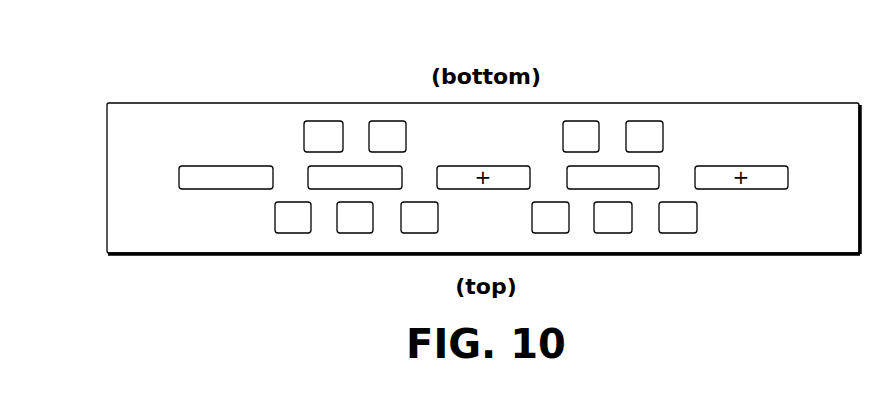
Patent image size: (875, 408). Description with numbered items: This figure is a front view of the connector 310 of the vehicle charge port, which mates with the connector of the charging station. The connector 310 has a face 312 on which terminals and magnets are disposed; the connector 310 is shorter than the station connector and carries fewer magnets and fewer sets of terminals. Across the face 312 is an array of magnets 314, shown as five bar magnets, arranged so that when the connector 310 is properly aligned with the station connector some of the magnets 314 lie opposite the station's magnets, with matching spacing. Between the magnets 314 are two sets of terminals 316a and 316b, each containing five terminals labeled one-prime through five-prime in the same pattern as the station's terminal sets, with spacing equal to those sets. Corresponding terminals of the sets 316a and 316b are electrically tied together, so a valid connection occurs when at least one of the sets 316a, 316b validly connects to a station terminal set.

The connector 310 is at (784, 103).
The face 312 is at (802, 256).
The magnets 314 is at (226, 165).
The set of terminals 316a is at (334, 92).
The set of terminals 316b is at (633, 92).